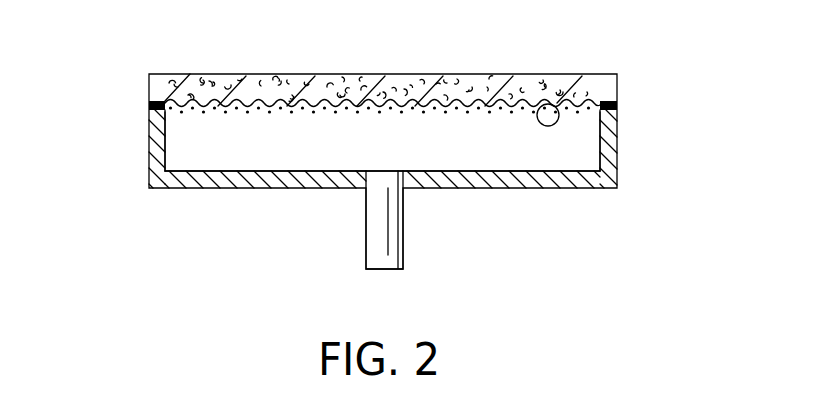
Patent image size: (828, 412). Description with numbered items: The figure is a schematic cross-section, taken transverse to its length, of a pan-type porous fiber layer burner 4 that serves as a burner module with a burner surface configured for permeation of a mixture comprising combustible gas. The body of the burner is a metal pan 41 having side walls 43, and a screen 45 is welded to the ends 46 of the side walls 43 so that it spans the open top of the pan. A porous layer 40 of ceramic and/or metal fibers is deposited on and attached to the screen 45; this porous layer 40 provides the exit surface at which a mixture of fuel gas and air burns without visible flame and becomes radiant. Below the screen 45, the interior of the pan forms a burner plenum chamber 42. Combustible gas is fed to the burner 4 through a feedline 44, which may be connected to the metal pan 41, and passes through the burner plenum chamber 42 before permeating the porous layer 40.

The pan-type porous fiber layer burner 4 is at (248, 225).
The porous layer 40 is at (188, 73).
The metal pan 41 is at (172, 190).
The burner plenum chamber 42 is at (497, 150).
The side walls 43 is at (150, 150).
The feedline 44 is at (403, 255).
The screen 45 is at (557, 107).
The ends of side walls 46 is at (149, 106).